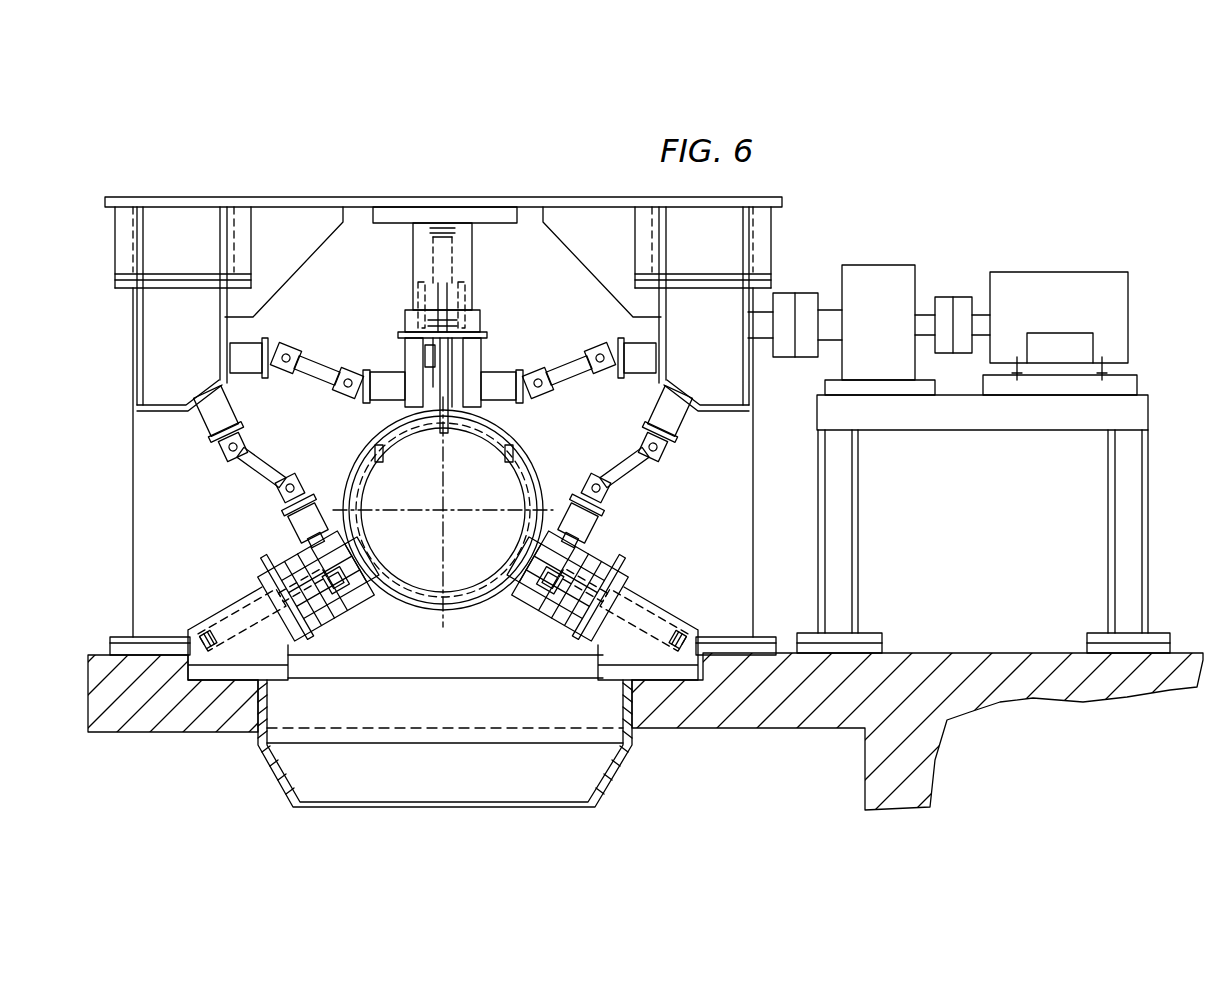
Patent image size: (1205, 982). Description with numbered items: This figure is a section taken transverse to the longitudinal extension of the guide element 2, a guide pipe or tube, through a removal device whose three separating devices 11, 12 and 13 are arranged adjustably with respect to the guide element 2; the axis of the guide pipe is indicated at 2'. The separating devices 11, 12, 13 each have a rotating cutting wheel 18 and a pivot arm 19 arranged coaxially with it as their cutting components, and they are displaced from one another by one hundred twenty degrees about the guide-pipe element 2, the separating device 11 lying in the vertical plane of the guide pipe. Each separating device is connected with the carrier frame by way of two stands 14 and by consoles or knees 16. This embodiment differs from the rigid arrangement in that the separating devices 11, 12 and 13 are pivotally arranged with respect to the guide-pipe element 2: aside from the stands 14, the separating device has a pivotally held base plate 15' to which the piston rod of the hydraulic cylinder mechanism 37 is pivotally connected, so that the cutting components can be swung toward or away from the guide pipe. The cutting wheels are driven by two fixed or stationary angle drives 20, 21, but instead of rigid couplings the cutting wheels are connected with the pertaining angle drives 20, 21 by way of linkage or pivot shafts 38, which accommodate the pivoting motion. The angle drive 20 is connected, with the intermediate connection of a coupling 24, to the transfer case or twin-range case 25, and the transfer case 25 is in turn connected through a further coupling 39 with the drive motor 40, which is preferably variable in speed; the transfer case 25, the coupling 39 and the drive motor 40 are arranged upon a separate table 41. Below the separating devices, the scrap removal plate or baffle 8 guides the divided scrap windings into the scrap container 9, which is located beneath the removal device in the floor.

The guide element 2 is at (443, 530).
The roll axis 2' is at (443, 512).
The scrap removal plate 8 is at (592, 770).
The scrap container 9 is at (790, 791).
The separating device 11 is at (495, 320).
The separating device 12 is at (362, 624).
The separating device 13 is at (645, 558).
The stands 14 is at (415, 355).
The pivotally held base plate 15' is at (427, 295).
The consoles 16 is at (220, 627).
The cutting wheel 18 is at (465, 435).
The pivot arm 19 is at (418, 436).
The angle drive 20 is at (690, 313).
The angle drive 21 is at (180, 327).
The coupling 24 is at (787, 350).
The transfer case 25 is at (885, 278).
The hydraulic cylinder mechanism 37 is at (470, 266).
The pivot shafts 38 is at (627, 467).
The coupling 39 is at (960, 307).
The drive motor 40 is at (1062, 293).
The table 41 is at (969, 418).